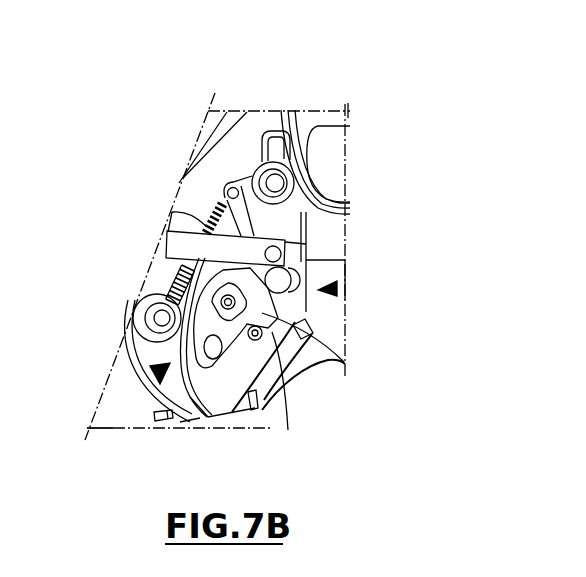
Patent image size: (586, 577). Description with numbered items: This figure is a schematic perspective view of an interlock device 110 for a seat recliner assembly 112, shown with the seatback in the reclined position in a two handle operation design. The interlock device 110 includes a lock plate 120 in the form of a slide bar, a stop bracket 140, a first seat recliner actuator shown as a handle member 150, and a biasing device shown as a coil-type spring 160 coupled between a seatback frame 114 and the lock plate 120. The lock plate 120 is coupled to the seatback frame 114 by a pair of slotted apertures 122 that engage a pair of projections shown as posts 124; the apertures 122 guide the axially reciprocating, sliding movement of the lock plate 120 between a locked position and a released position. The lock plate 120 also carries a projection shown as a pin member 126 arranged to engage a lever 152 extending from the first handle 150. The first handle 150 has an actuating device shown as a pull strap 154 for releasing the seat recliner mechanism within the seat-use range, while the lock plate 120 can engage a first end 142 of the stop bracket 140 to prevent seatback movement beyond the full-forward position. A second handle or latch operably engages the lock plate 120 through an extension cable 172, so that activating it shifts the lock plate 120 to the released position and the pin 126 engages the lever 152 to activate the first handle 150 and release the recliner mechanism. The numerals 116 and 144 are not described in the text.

The interlock device 110 is at (147, 382).
The seat recliner assembly 112 is at (345, 282).
The seatback frame 114 is at (301, 235).
The base frame line 116 is at (112, 418).
The lock plate 120 is at (197, 418).
The slotted apertures 122 is at (300, 208).
The posts 124 is at (278, 183).
The pin member 126 is at (296, 358).
The stop bracket 140 is at (271, 392).
The first end 142 is at (250, 400).
The tab 144 is at (312, 319).
The first handle member 150 is at (250, 309).
The lever 152 is at (344, 363).
The pull strap 154 is at (190, 231).
The spring 160 is at (207, 219).
The extension cable 172 is at (281, 112).